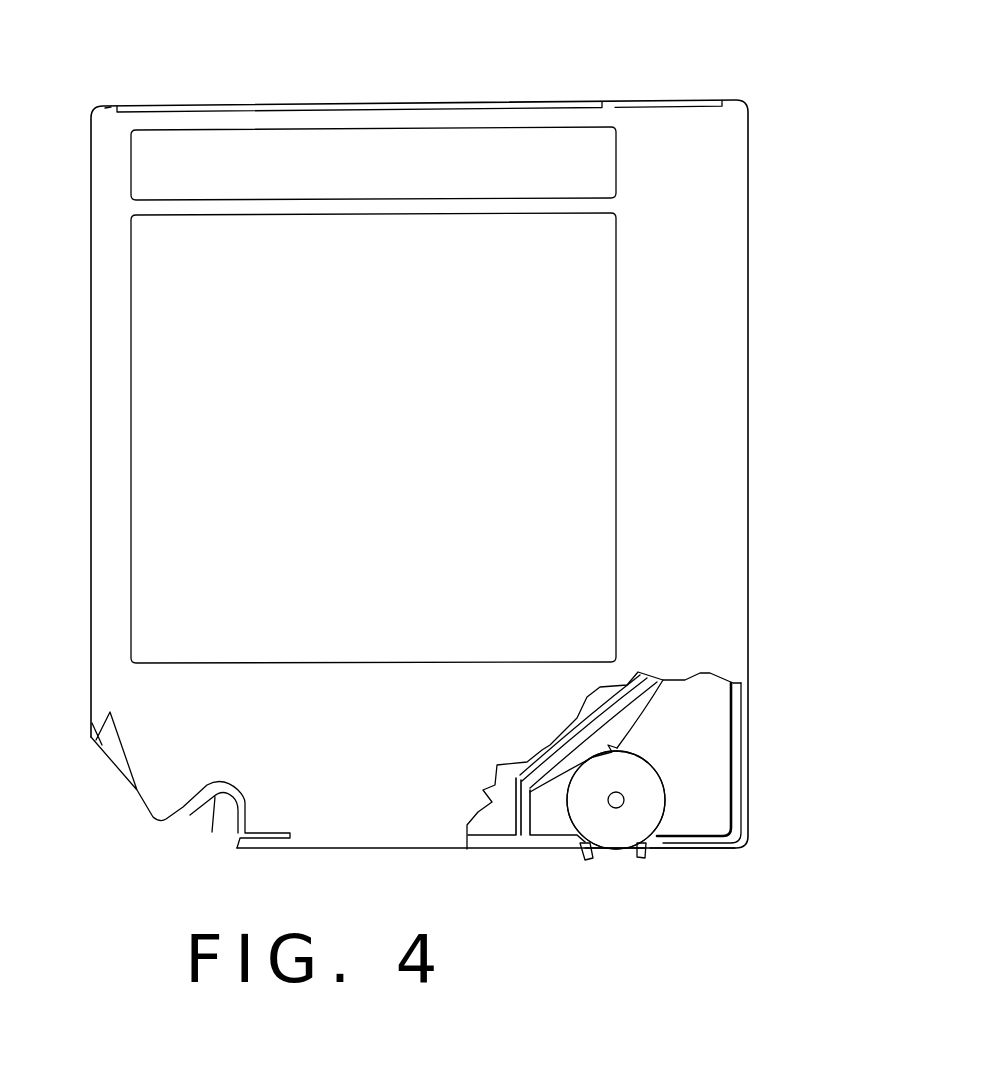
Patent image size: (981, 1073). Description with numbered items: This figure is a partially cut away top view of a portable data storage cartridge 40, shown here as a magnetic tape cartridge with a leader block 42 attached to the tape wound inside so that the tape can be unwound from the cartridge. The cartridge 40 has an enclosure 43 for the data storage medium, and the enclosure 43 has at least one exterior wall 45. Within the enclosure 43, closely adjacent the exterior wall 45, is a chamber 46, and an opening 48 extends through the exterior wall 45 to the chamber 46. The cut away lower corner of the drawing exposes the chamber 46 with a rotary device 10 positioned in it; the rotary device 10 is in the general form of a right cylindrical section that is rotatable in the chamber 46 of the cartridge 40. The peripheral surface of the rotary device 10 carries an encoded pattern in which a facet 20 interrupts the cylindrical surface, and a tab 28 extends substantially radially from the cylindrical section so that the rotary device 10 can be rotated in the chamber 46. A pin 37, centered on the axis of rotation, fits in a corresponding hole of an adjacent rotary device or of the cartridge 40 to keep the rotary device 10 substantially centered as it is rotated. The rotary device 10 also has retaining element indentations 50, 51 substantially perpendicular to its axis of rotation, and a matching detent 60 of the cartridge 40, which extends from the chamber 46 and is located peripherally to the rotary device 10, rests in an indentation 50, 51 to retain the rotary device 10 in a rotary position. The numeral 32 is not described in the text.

The portable data storage cartridge 40 is at (450, 487).
The enclosure 43 is at (747, 455).
The leader block 42 is at (212, 832).
The chamber 46 is at (690, 833).
The detent 60 is at (618, 746).
The indentation 50 is at (620, 750).
The indentation 51 is at (655, 775).
The rotary device 10 is at (668, 798).
The pin 37 is at (616, 800).
The tab 28 is at (585, 850).
The facet 20 is at (622, 847).
The opening 48 is at (592, 847).
The exterior wall 45 is at (697, 847).
The lower edge 32 is at (660, 847).